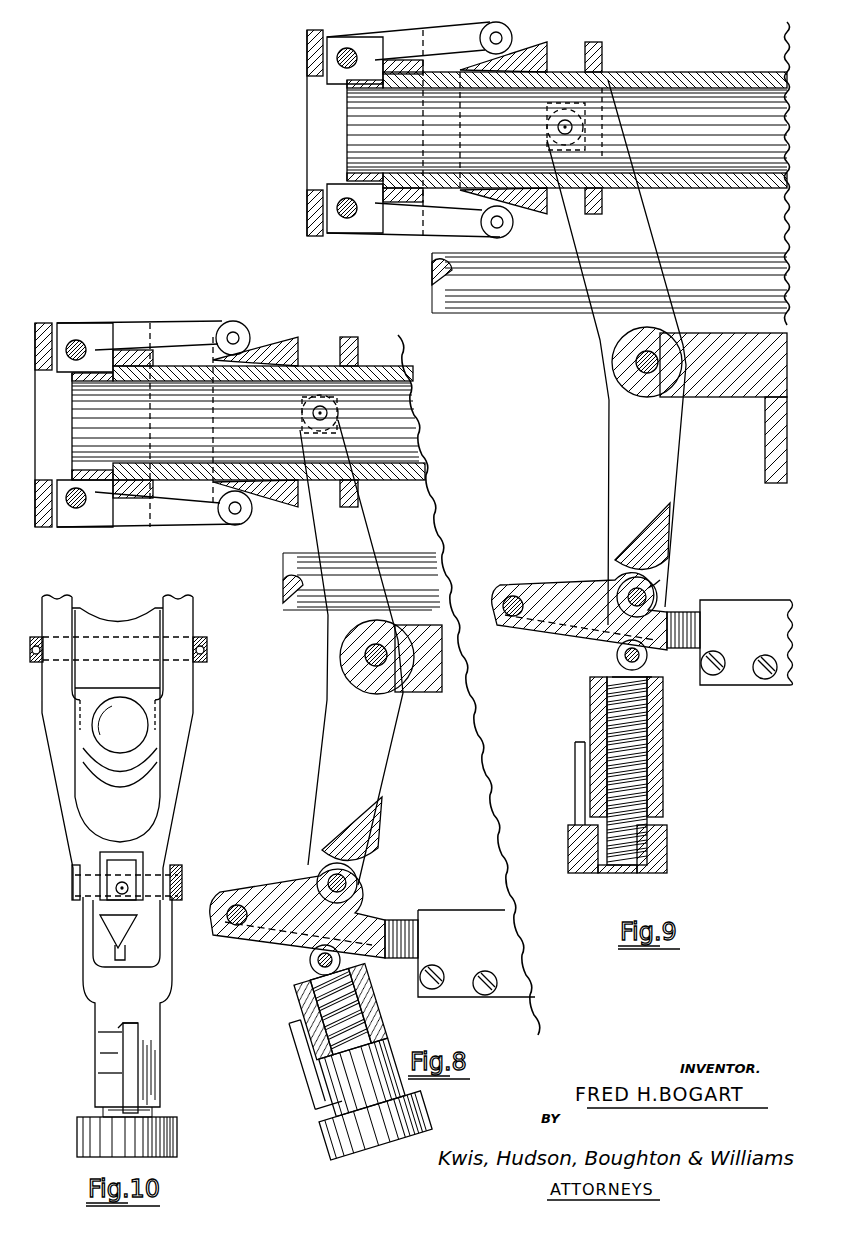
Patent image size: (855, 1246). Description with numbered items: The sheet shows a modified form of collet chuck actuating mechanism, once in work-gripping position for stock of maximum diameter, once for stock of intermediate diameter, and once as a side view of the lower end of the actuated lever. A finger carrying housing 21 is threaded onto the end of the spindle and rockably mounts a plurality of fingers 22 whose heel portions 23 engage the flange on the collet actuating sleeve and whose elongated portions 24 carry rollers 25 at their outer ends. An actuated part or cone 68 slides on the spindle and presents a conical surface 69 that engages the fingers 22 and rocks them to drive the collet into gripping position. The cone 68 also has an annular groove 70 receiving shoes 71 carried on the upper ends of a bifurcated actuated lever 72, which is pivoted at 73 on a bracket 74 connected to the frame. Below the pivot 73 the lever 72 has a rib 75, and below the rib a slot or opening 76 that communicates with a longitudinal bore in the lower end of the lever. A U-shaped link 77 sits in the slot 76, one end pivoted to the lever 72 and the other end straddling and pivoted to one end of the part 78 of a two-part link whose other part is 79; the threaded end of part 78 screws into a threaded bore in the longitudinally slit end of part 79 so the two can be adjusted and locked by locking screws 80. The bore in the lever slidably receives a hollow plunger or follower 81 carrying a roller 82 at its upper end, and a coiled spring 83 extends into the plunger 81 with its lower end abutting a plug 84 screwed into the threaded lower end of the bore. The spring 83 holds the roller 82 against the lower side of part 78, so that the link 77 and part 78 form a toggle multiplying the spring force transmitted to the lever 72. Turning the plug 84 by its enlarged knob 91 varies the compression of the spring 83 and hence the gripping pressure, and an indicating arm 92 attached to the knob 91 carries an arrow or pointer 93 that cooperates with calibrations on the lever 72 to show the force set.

In FIG. 9, the finger carrying housing 21 is at (310, 58).
In FIG. 8, the finger carrying housing 21 is at (45, 323).
In FIG. 9, the fingers 22 is at (393, 224).
In FIG. 8, the fingers 22 is at (97, 515).
In FIG. 9, the heel portions 23 is at (338, 184).
In FIG. 8, the heel portions 23 is at (62, 480).
In FIG. 9, the elongated portions 24 is at (446, 226).
In FIG. 8, the elongated portions 24 is at (176, 516).
In FIG. 9, the rollers 25 is at (511, 219).
In FIG. 8, the rollers 25 is at (250, 513).
In FIG. 9, the actuated part or cone 68 is at (548, 42).
In FIG. 8, the actuated part or cone 68 is at (300, 340).
In FIG. 9, the conical surface 69 is at (510, 46).
In FIG. 8, the conical surface 69 is at (250, 343).
In FIG. 9, the annular groove 70 is at (588, 60).
In FIG. 8, the annular groove 70 is at (342, 350).
In FIG. 9, the shoes 71 is at (578, 108).
In FIG. 8, the shoes 71 is at (320, 414).
In FIG. 9, the actuated lever 72 is at (612, 418).
In FIG. 8, the actuated lever 72 is at (343, 711).
In FIG. 10, the actuated lever 72 is at (190, 712).
In FIG. 9, the pivot 73 is at (640, 362).
In FIG. 8, the pivot 73 is at (368, 656).
In FIG. 10, the pivot 73 is at (208, 648).
In FIG. 9, the bracket 74 is at (745, 385).
In FIG. 9, the rib 75 is at (668, 548).
In FIG. 8, the rib 75 is at (352, 829).
In FIG. 9, the slot or opening 76 is at (661, 588).
In FIG. 9, the U-shaped link 77 is at (606, 591).
In FIG. 8, the U-shaped link 77 is at (313, 876).
In FIG. 9, the part of two-part link 78 is at (516, 596).
In FIG. 8, the part of two-part link 78 is at (380, 920).
In FIG. 9, the part of two-part link 79 is at (752, 612).
In FIG. 8, the part of two-part link 79 is at (470, 922).
In FIG. 9, the locking screws 80 is at (715, 677).
In FIG. 8, the locking screws 80 is at (434, 990).
In FIG. 9, the hollow plunger or follower 81 is at (612, 677).
In FIG. 8, the hollow plunger or follower 81 is at (340, 975).
In FIG. 9, the roller 82 is at (624, 657).
In FIG. 8, the roller 82 is at (312, 960).
In FIG. 9, the coiled spring 83 is at (640, 740).
In FIG. 8, the coiled spring 83 is at (346, 1015).
In FIG. 9, the plug 84 is at (655, 830).
In FIG. 9, the knob 91 is at (668, 870).
In FIG. 8, the knob 91 is at (370, 1152).
In FIG. 10, the knob 91 is at (170, 1140).
In FIG. 8, the indicating arm 92 is at (272, 1052).
In FIG. 10, the indicating arm 92 is at (135, 1063).
In FIG. 10, the arrow or pointer 93 is at (140, 1023).